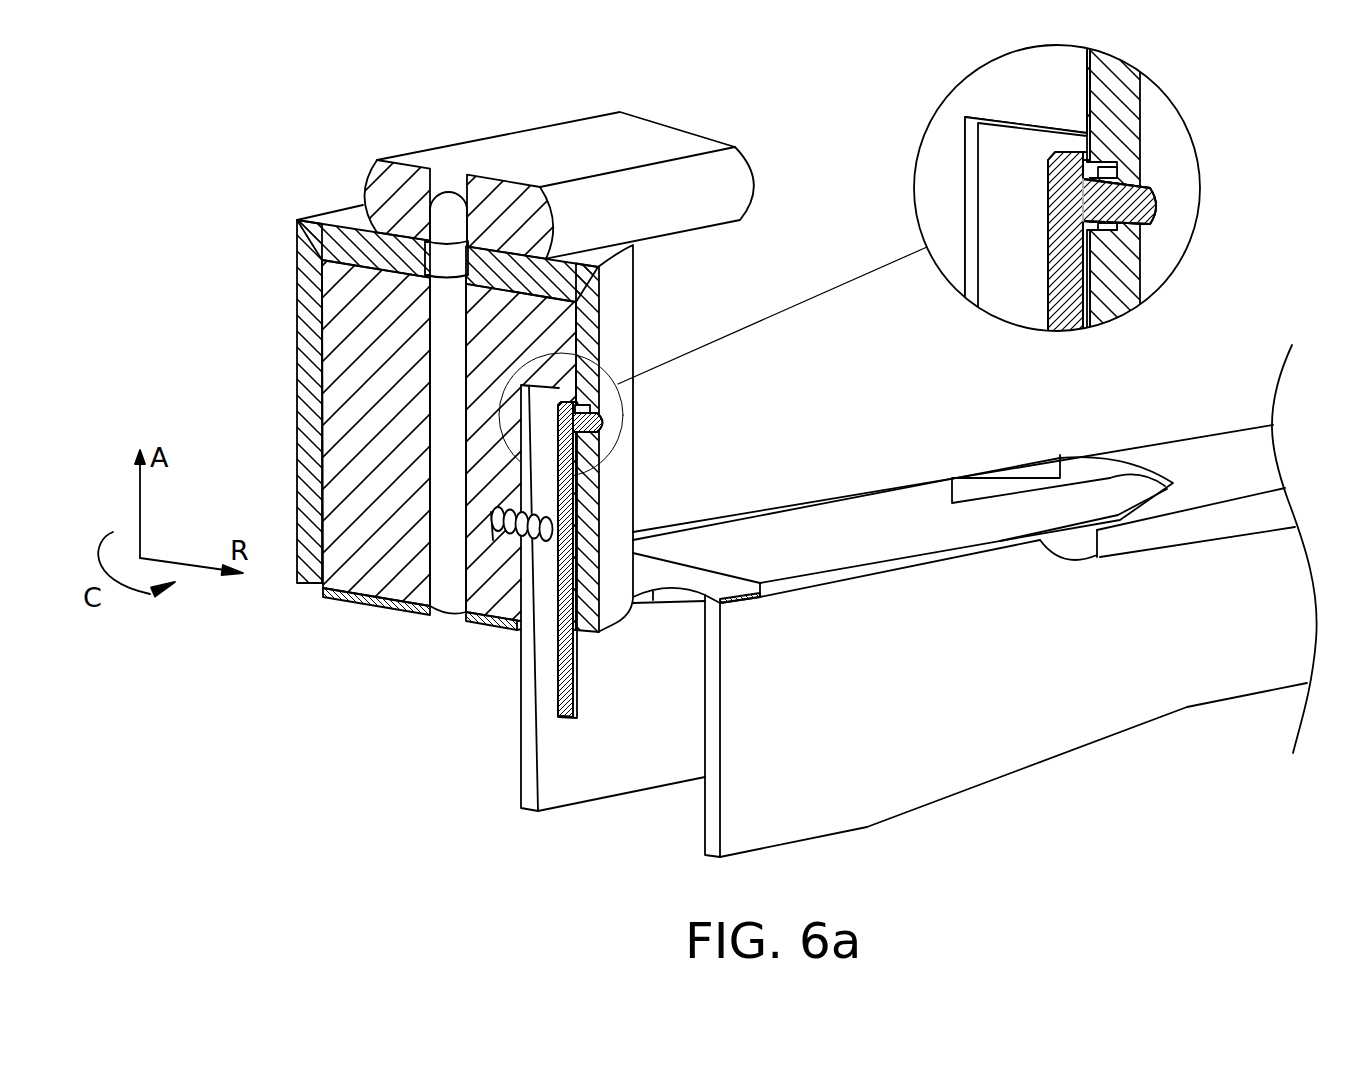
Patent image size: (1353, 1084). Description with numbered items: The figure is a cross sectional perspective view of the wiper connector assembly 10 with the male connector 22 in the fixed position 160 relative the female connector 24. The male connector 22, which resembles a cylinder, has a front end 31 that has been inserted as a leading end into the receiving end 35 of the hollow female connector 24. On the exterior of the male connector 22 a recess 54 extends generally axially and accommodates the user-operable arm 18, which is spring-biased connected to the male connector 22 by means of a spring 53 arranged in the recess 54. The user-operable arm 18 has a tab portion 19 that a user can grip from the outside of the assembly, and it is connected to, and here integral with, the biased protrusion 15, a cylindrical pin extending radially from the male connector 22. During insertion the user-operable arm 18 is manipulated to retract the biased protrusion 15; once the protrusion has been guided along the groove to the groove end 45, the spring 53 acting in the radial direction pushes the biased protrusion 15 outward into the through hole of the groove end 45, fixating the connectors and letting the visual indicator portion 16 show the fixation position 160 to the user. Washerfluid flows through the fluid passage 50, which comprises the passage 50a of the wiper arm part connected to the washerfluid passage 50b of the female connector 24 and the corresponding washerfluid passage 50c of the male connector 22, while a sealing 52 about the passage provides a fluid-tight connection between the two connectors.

The wiper connector assembly 10 is at (226, 134).
The fixed position 160 is at (365, 349).
The fluid passage 50 is at (430, 355).
The passage of the wiper arm part 50a is at (448, 217).
The washerfluid passage of the female connector 50b is at (450, 253).
The washerfluid passage of the male connector 50c is at (450, 302).
The sealing 52 is at (430, 355).
The female connector 24 is at (297, 377).
The front end / receiving end of the female connector 35 is at (302, 585).
The male connector 22 is at (370, 583).
The front end of the male connector 31 is at (533, 332).
The spring 53 is at (513, 550).
The recess 54 is at (547, 577).
The user-operable arm 18 is at (565, 667).
The tab portion 19 is at (558, 700).
The groove end 45 is at (1120, 177).
The biased protrusion 15 is at (1132, 183).
The visual indicator portion 16 is at (1155, 207).